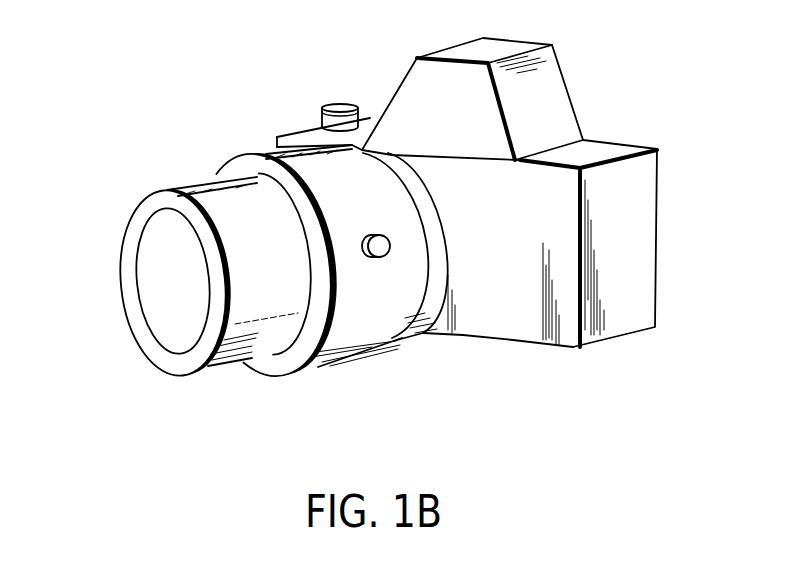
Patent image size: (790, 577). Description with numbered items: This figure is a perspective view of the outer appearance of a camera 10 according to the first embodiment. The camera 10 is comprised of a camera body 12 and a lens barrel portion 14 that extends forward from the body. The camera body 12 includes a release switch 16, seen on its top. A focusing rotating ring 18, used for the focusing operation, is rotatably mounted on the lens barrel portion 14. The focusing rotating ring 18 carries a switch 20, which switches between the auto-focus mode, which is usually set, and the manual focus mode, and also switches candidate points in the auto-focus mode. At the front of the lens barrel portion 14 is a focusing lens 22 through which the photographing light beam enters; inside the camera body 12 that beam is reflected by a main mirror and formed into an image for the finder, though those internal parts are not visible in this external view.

The camera 10 is at (371, 235).
The camera body 12 is at (523, 333).
The lens barrel portion 14 is at (243, 358).
The release switch 16 is at (343, 100).
The focusing rotating ring 18 is at (323, 373).
The switch 20 is at (373, 263).
The focusing lens 22 is at (152, 303).